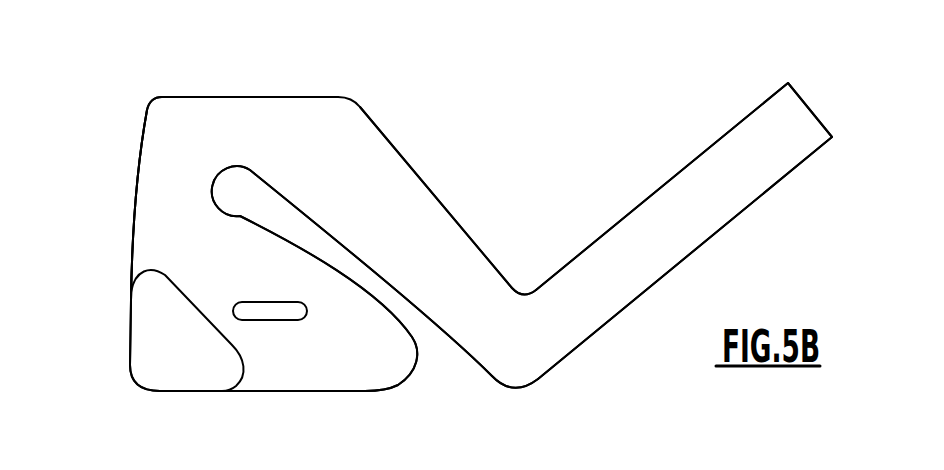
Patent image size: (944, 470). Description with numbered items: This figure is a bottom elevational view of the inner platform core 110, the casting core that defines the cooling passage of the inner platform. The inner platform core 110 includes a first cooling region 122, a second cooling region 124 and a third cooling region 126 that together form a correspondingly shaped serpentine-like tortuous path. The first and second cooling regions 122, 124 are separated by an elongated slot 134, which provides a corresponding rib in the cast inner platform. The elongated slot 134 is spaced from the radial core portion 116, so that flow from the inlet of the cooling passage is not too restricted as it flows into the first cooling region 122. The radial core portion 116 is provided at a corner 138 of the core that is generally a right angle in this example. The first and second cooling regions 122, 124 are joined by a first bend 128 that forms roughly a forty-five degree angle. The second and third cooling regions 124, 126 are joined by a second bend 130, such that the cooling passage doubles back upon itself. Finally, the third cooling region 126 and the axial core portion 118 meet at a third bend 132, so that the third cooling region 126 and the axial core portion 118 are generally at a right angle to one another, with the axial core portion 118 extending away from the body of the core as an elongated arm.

The inner platform core 110 is at (503, 213).
The radial core portion 116 is at (157, 363).
The axial core portion 118 is at (755, 130).
The first cooling region 122 is at (300, 402).
The second cooling region 124 is at (276, 235).
The third cooling region 126 is at (428, 194).
The first bend 128 is at (400, 360).
The second bend 130 is at (163, 120).
The third bend 132 is at (528, 370).
The elongated slot 134 is at (271, 320).
The corner 138 is at (129, 352).